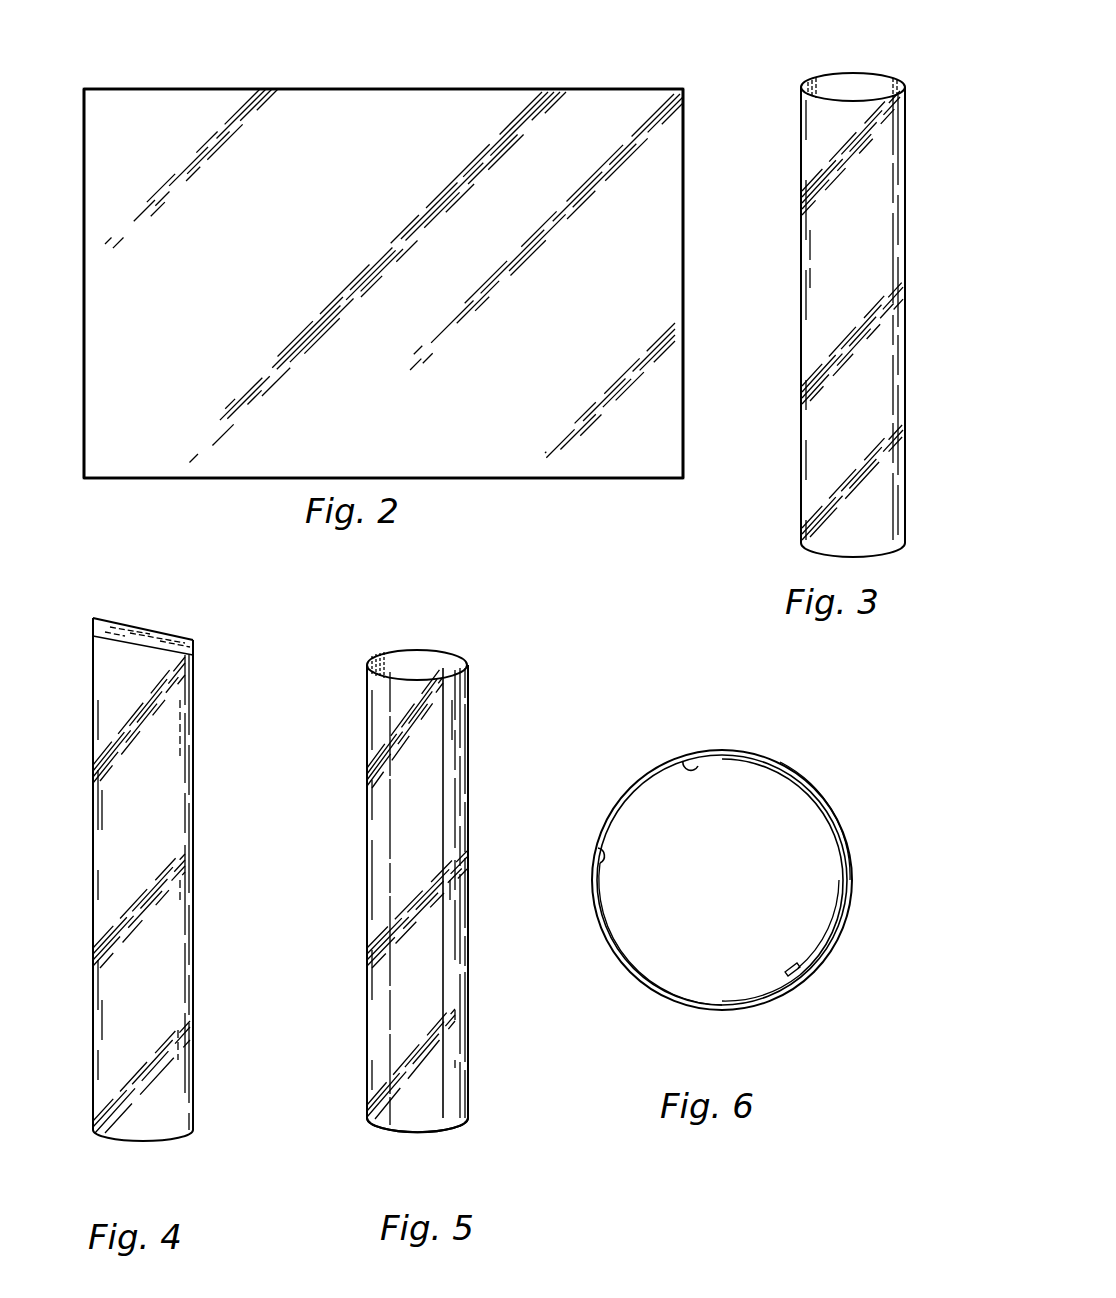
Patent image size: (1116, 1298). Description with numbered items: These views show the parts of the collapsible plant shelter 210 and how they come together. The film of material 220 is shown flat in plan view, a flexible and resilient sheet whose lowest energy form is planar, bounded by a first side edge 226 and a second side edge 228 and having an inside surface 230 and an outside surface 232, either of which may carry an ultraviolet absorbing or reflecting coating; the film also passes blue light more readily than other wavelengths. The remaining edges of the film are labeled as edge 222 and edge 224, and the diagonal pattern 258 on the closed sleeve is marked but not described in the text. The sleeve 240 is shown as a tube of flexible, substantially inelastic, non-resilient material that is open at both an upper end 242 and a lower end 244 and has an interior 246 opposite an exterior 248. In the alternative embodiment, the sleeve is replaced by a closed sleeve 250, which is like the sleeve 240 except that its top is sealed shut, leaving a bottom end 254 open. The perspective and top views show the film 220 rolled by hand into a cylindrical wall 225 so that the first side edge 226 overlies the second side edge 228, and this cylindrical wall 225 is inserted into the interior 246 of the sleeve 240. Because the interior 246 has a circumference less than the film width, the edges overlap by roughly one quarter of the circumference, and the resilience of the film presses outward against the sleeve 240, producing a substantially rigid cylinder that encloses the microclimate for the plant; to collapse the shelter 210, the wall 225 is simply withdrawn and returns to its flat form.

In FIG. 5, the collapsible plant shelter 210 is at (490, 738).
In FIG. 6, the collapsible plant shelter 210 is at (782, 734).
In FIG. 2, the film of material 220 is at (268, 252).
In FIG. 2, the first edge of sheet 222 is at (378, 89).
In FIG. 5, the first edge of sheet 222 is at (430, 652).
In FIG. 2, the second edge of sheet 224 is at (510, 480).
In FIG. 5, the second edge of sheet 224 is at (392, 1132).
In FIG. 5, the cylindrical wall 225 is at (372, 660).
In FIG. 6, the cylindrical wall 225 is at (597, 878).
In FIG. 2, the first side edge 226 is at (84, 263).
In FIG. 5, the first side edge 226 is at (447, 1086).
In FIG. 2, the second side edge 228 is at (686, 284).
In FIG. 5, the second side edge 228 is at (390, 810).
In FIG. 5, the inside surface 230 is at (445, 663).
In FIG. 6, the inside surface 230 is at (596, 860).
In FIG. 6, the outside surface 232 is at (688, 758).
In FIG. 3, the sleeve 240 is at (782, 54).
In FIG. 5, the sleeve 240 is at (373, 921).
In FIG. 6, the sleeve 240 is at (832, 966).
In FIG. 3, the upper end 242 is at (801, 90).
In FIG. 5, the upper end 242 is at (375, 694).
In FIG. 3, the lower end 244 is at (800, 542).
In FIG. 5, the lower end 244 is at (368, 1081).
In FIG. 3, the interior 246 is at (828, 99).
In FIG. 6, the interior 246 is at (783, 768).
In FIG. 3, the exterior 248 is at (830, 228).
In FIG. 5, the exterior 248 is at (383, 866).
In FIG. 6, the exterior 248 is at (768, 1005).
In FIG. 4, the closed sleeve 250 is at (160, 609).
In FIG. 4, the bottom end 254 is at (194, 641).
In FIG. 4, the stripe pattern 258 is at (120, 976).